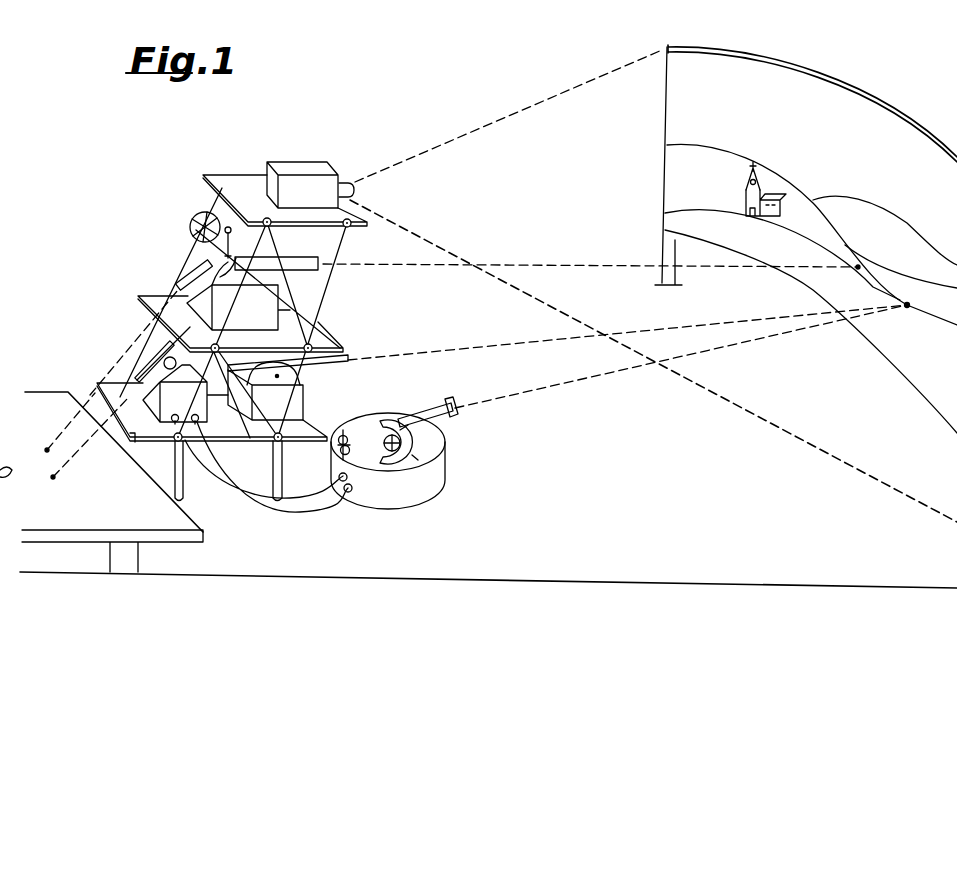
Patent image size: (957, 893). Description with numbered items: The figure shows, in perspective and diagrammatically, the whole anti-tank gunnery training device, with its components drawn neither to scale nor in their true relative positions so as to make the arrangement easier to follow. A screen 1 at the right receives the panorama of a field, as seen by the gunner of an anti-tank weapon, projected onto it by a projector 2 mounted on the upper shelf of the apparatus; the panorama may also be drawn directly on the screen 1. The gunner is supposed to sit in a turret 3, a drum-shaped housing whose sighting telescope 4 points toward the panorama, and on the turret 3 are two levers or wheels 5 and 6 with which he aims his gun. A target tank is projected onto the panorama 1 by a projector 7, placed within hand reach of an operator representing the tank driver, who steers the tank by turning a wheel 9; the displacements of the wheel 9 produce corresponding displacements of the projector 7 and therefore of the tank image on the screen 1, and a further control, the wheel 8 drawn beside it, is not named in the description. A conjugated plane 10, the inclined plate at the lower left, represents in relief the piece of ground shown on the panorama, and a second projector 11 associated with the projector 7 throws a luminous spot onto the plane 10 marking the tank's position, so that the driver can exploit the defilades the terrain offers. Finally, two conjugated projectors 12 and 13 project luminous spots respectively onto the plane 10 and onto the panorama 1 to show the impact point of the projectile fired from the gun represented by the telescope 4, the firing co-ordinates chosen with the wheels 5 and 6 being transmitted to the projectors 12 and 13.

The screen 1 is at (910, 372).
The projector 2 is at (312, 168).
The turret 3 is at (388, 498).
The sighting telescope 4 is at (444, 416).
The lever or wheel 5 is at (337, 443).
The lever or wheel 6 is at (385, 447).
The projector 7 is at (309, 257).
The hand wheel 8 is at (190, 227).
The wheel 9 is at (230, 227).
The conjugated plane 10 is at (50, 392).
The second projector 11 is at (180, 281).
The conjugated projector 12 is at (136, 378).
The conjugated projector 13 is at (318, 367).